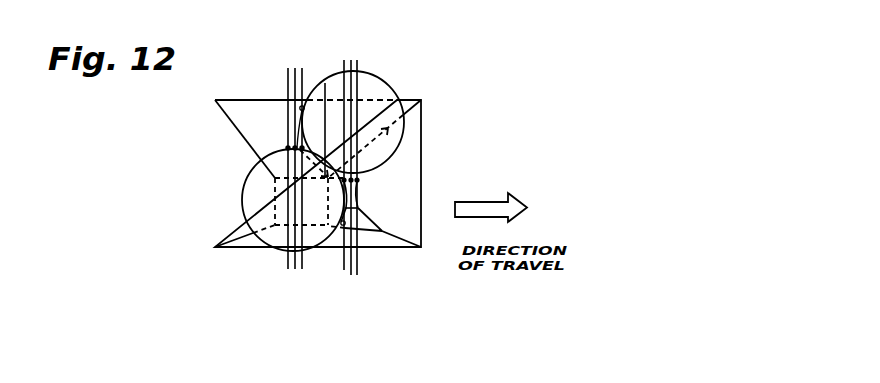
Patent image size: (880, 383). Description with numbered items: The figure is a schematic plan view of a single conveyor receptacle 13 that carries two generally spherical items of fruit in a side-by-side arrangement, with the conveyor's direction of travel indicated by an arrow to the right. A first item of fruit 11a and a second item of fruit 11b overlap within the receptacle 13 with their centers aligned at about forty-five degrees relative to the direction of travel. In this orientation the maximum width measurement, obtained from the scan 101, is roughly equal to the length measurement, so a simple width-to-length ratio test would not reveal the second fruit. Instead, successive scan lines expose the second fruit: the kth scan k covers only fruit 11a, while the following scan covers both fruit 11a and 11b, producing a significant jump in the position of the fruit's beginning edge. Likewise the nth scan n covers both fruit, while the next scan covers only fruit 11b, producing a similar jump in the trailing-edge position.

The receptacle 13 is at (415, 122).
The first item of fruit 11a is at (374, 86).
The second item of fruit 11b is at (264, 249).
The scan 101 is at (326, 83).
The nth scan n is at (295, 68).
The kth scan k is at (348, 265).